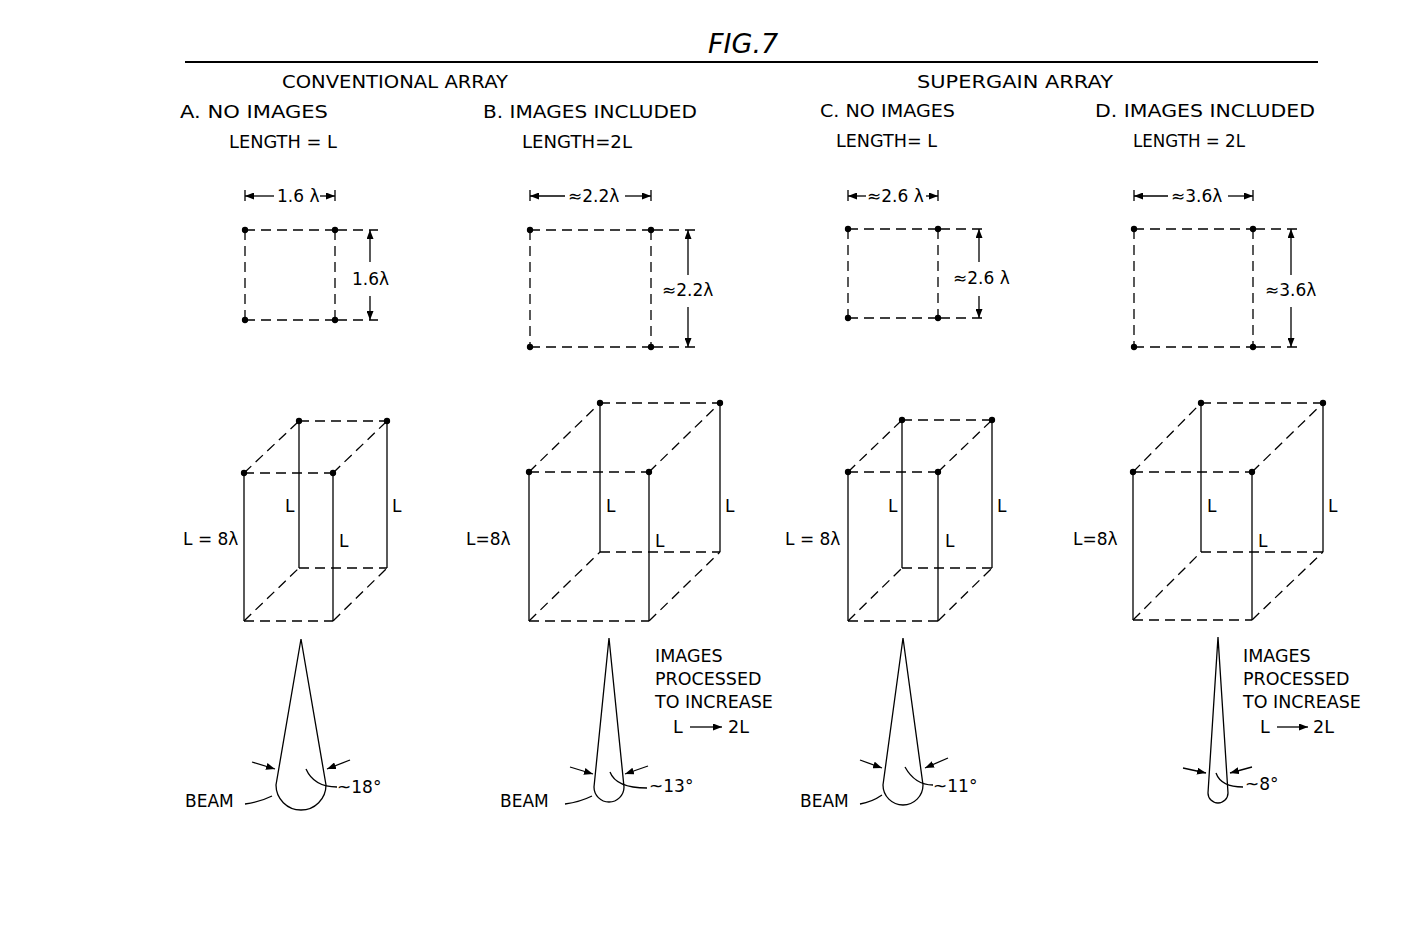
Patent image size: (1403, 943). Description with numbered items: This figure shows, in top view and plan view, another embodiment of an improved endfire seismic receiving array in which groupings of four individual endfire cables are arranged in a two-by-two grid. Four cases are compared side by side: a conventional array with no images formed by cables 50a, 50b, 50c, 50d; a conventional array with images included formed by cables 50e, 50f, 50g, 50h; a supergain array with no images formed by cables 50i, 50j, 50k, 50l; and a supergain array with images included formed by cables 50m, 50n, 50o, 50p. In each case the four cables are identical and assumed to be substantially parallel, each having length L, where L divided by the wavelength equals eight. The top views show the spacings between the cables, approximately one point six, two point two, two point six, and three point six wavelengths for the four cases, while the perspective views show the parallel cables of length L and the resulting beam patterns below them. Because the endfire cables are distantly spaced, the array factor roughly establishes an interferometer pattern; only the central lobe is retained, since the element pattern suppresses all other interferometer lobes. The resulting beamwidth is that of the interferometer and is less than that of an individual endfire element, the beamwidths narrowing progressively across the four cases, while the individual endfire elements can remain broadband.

The cable 50a is at (243, 230).
The cable 50b is at (241, 323).
The cable 50c is at (336, 323).
The cable 50d is at (336, 229).
The cable 50e is at (529, 350).
The cable 50f is at (528, 230).
The cable 50g is at (653, 229).
The cable 50h is at (651, 350).
The cable 50i is at (846, 321).
The cable 50j is at (846, 230).
The cable 50k is at (940, 229).
The cable 50l is at (939, 321).
The cable 50m is at (1133, 229).
The cable 50n is at (1132, 350).
The cable 50o is at (1254, 350).
The cable 50p is at (1254, 229).